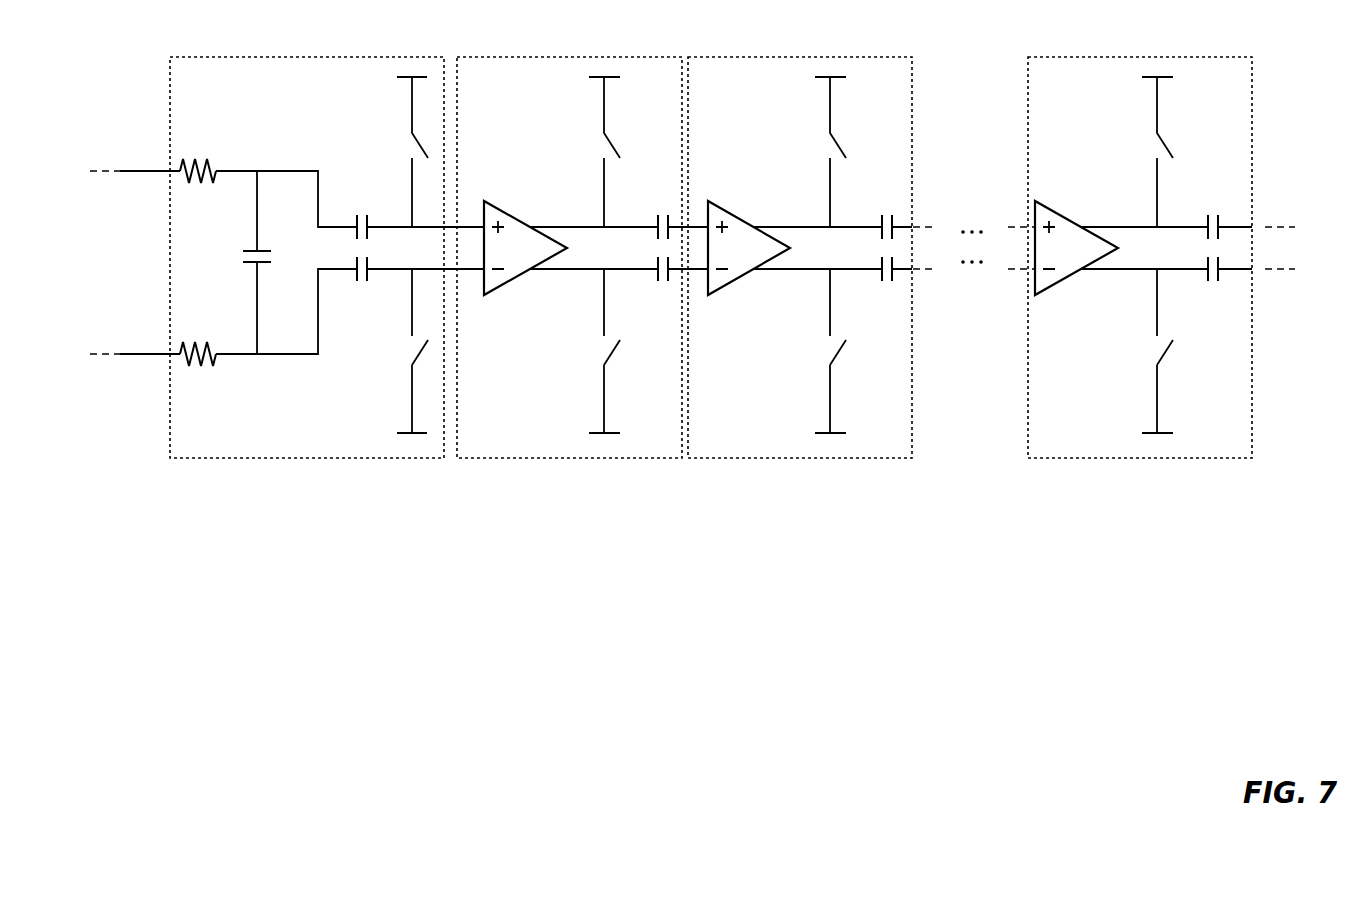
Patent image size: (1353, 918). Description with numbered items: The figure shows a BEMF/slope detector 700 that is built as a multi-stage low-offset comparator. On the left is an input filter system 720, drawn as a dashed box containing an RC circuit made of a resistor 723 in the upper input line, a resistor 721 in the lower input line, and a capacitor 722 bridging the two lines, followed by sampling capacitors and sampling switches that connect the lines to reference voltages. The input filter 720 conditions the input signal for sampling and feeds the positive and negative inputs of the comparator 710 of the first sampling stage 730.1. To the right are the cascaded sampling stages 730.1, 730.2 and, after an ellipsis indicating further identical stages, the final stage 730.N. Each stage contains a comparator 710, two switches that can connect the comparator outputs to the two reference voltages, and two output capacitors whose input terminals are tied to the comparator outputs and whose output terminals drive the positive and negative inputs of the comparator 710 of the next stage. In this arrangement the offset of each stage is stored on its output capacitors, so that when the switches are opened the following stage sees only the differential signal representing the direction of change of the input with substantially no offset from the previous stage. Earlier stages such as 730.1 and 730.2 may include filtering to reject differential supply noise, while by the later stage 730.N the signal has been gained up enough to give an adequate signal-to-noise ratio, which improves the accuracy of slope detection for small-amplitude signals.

The BEMF/slope detector 700 is at (701, 454).
The comparator 710 is at (502, 283).
The input filter system 720 is at (327, 382).
The resistor 721 is at (205, 375).
The capacitor 722 is at (237, 259).
The resistor 723 is at (198, 191).
The first sampling stage 730.1 is at (558, 472).
The second sampling stage 730.2 is at (789, 472).
The Nth sampling stage 730.N is at (1148, 472).